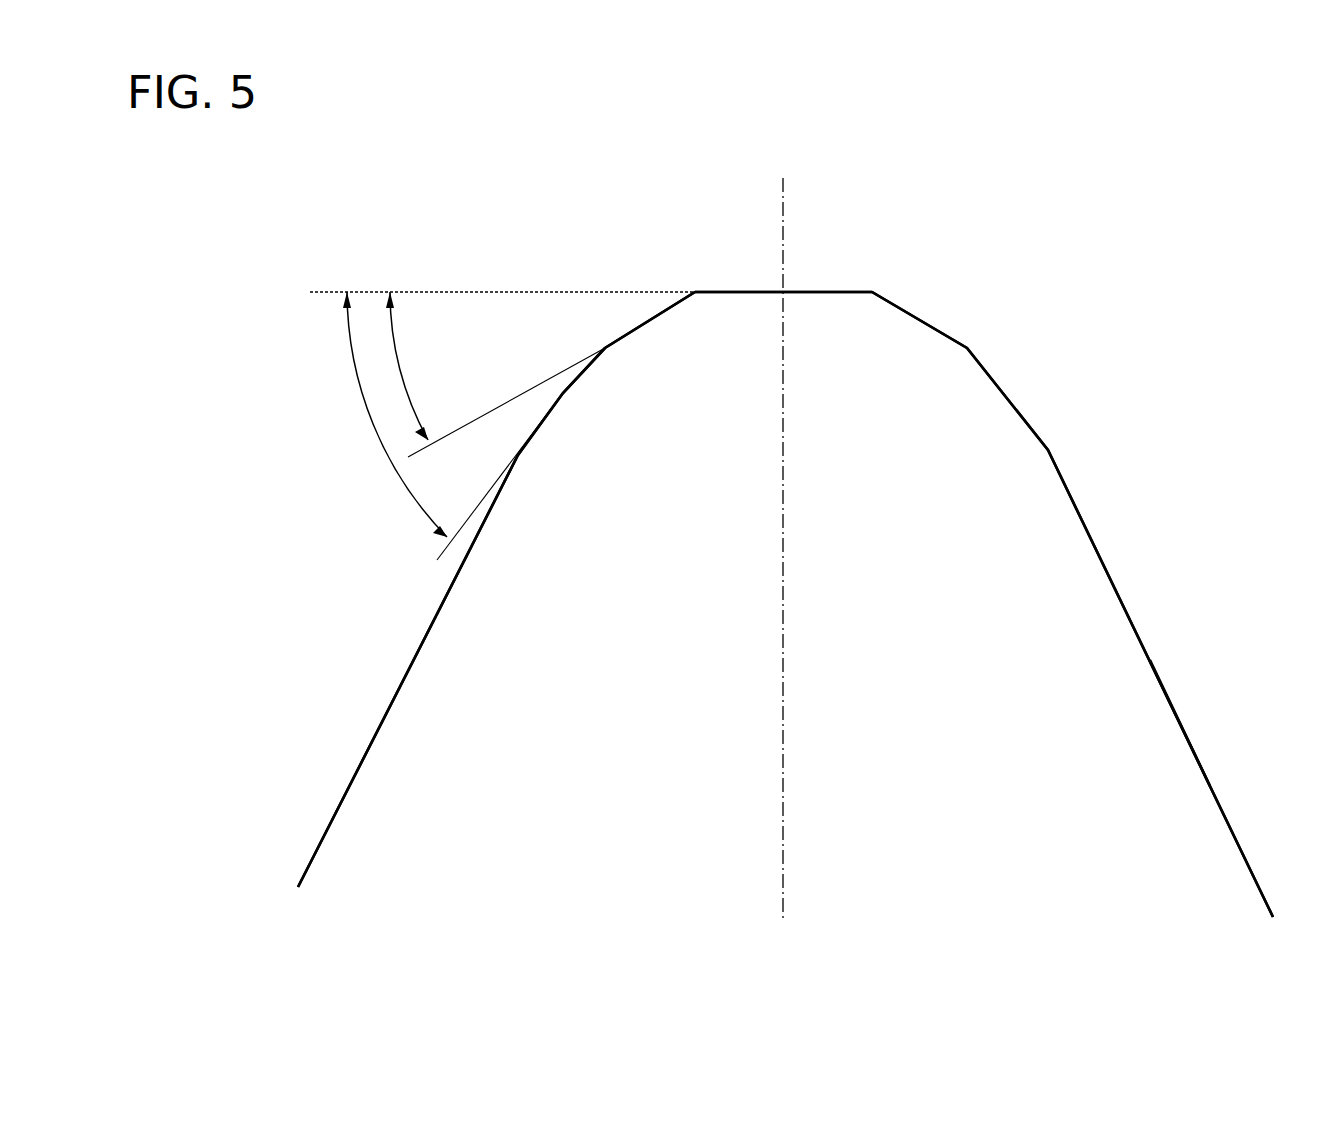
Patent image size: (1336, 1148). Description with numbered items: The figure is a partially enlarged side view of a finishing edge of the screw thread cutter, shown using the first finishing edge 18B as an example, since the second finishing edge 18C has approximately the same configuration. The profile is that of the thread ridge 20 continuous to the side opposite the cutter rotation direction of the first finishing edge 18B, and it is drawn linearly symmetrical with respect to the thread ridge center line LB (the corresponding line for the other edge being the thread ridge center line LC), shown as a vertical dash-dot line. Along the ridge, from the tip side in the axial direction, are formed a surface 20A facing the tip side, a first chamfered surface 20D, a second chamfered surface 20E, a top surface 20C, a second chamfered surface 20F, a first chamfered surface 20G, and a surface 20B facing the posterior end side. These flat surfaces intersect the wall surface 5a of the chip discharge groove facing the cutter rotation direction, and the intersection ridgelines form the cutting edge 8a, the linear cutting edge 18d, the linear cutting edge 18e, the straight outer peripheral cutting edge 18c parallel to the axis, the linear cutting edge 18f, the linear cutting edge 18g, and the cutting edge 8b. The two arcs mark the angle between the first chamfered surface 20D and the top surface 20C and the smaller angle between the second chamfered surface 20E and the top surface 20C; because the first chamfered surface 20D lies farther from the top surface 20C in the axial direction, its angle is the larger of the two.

The first finishing edge 18B is at (785, 506).
The second finishing edge 18C is at (785, 506).
The thread ridge 20 is at (413, 208).
The cutting edge 8a is at (408, 671).
The surface facing the tip side 20A is at (425, 633).
The cutting edge 8b is at (1160, 683).
The surface facing the posterior end side 20B is at (1154, 665).
The outer peripheral cutting edge 18c is at (796, 228).
The top surface 20C is at (812, 292).
The linear cutting edge 18d is at (523, 343).
The first chamfered surface 20D is at (563, 393).
The linear cutting edge 18e is at (636, 257).
The second chamfered surface 20E is at (647, 320).
The linear cutting edge 18f is at (971, 276).
The second chamfered surface 20F is at (930, 325).
The linear cutting edge 18g is at (1094, 399).
The first chamfered surface 20G is at (1023, 417).
The wall surface 5a is at (1142, 729).
The thread ridge center line LB is at (853, 548).
The thread ridge center line LC is at (783, 727).